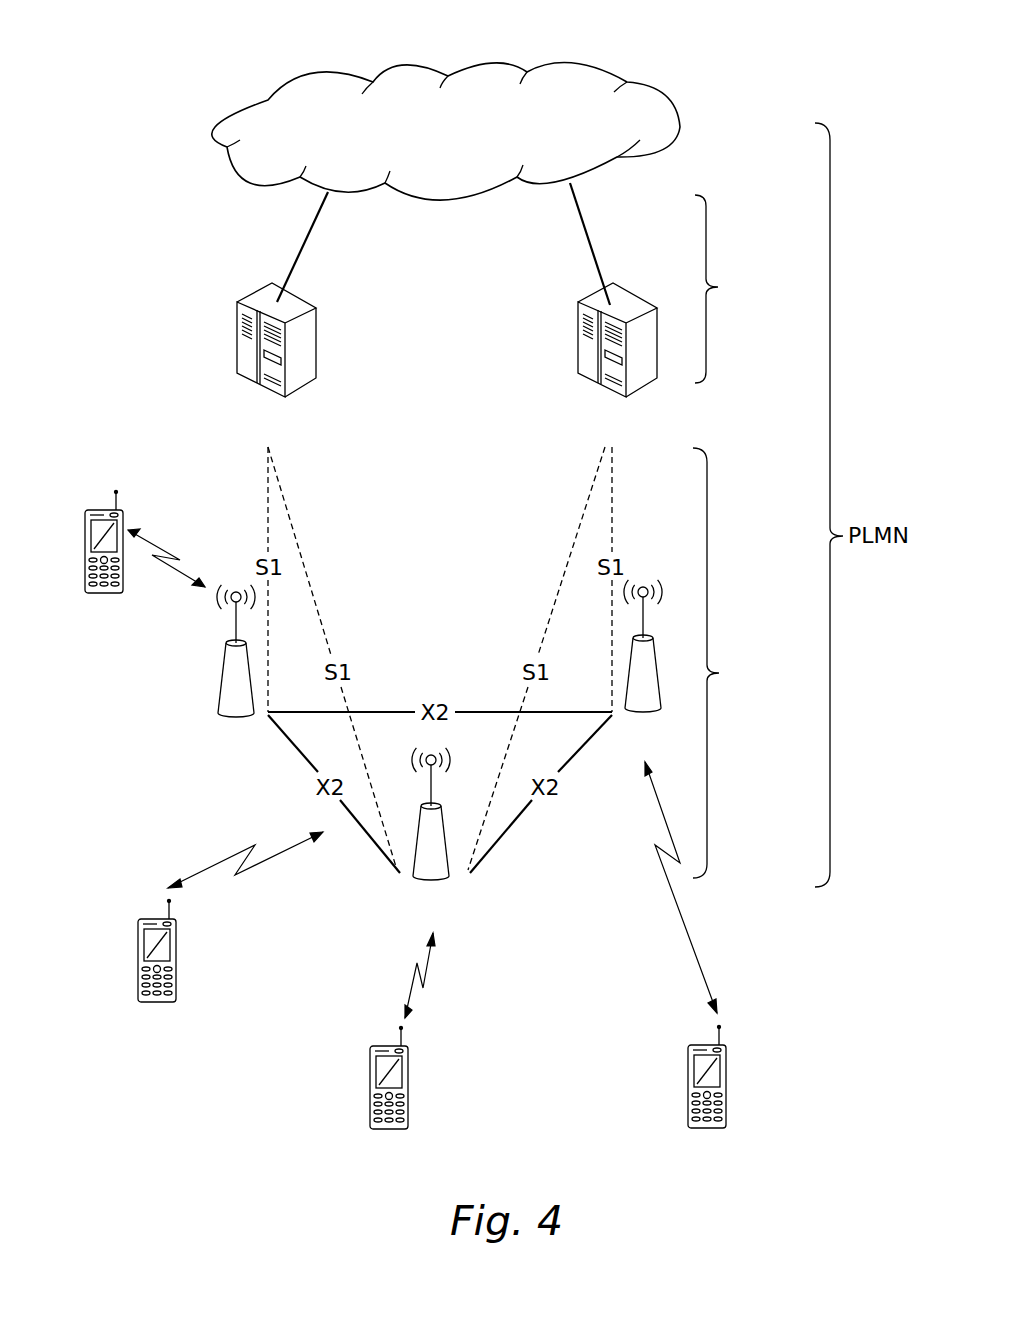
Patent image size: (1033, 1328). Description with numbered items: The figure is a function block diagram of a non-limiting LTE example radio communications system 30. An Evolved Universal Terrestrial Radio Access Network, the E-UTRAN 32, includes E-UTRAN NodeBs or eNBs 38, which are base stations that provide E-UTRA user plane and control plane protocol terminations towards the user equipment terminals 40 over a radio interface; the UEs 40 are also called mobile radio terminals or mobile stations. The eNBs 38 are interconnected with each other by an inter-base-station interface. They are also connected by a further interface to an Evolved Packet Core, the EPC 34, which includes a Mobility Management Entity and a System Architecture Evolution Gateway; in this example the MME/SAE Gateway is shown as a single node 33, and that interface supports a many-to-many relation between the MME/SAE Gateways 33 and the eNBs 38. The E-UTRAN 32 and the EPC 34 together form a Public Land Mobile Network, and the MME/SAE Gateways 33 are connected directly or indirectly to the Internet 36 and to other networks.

The LTE example radio communications system 30 is at (140, 306).
The E-UTRAN 32 is at (758, 663).
The MME/SAE Gateway 33 is at (303, 345).
The Evolved Packet Core 34 is at (733, 289).
The Internet 36 is at (647, 91).
The eNB 38 is at (230, 681).
The user equipment terminal 40 is at (93, 530).